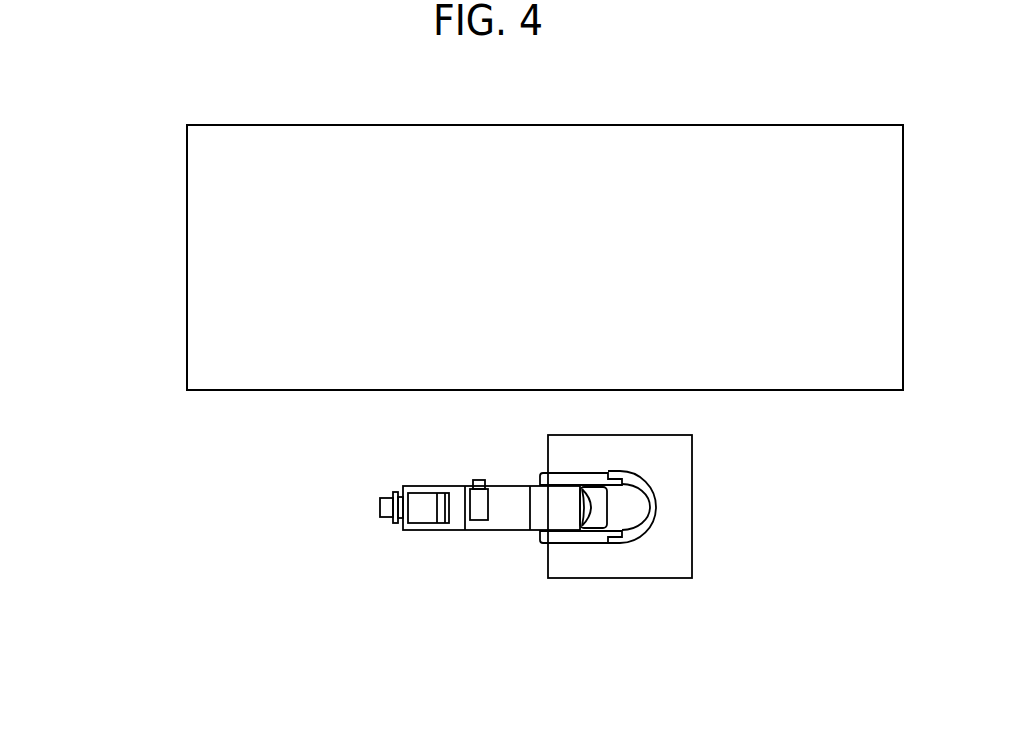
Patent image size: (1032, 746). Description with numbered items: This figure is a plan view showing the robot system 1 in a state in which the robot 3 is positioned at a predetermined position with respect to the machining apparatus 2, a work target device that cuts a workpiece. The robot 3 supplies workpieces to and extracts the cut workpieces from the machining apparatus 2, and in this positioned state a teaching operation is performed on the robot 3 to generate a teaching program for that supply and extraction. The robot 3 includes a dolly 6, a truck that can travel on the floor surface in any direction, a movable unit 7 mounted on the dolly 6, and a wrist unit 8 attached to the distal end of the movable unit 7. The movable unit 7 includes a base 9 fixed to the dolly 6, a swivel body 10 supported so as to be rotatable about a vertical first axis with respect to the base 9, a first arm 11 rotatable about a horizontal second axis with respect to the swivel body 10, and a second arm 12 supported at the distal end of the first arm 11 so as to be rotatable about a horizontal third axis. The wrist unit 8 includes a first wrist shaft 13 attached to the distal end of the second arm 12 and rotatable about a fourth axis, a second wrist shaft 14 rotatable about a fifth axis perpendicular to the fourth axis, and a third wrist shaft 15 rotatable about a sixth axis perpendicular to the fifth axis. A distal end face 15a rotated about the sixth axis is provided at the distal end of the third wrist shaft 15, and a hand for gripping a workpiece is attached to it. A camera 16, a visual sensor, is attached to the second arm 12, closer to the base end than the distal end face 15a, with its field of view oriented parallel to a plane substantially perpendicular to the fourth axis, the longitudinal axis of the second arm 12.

The robot system 1 is at (104, 111).
The machining apparatus 2 is at (186, 254).
The robot 3 is at (407, 588).
The dolly 6 is at (693, 460).
The movable unit 7 is at (510, 466).
The wrist unit 8 is at (376, 496).
The base 9 is at (657, 507).
The swivel body 10 is at (593, 545).
The first arm 11 is at (558, 542).
The second arm 12 is at (508, 530).
The first wrist shaft 13 is at (435, 530).
The second wrist shaft 14 is at (445, 500).
The third wrist shaft 15 is at (382, 518).
The distal end face 15a is at (378, 502).
The camera 16 is at (479, 520).